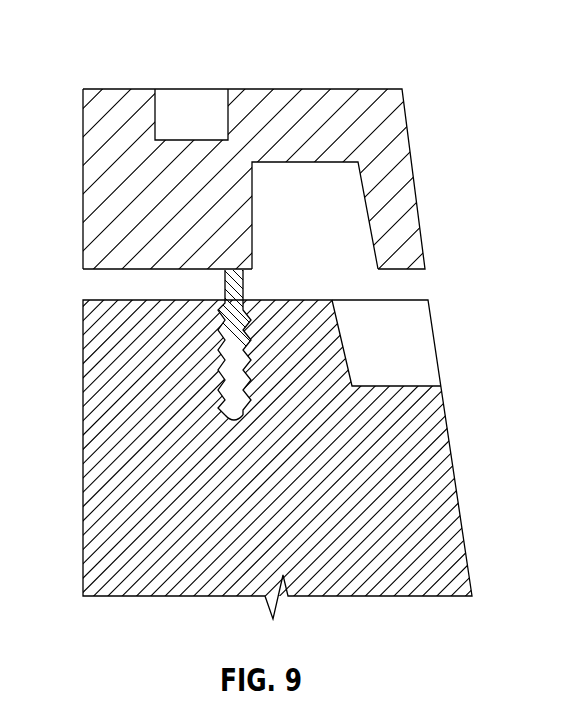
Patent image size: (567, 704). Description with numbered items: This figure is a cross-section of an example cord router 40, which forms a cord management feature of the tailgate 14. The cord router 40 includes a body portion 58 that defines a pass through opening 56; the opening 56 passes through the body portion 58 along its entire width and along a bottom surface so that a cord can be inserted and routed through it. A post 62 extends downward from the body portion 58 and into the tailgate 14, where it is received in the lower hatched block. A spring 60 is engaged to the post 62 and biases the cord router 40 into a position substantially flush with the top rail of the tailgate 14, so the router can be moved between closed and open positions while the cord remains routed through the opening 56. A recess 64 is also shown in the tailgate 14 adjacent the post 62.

The tailgate 14 is at (466, 548).
The cord router 40 is at (188, 89).
The pass through opening 56 is at (312, 158).
The body portion 58 is at (124, 144).
The spring 60 is at (250, 328).
The post 62 is at (232, 426).
The recess 64 is at (436, 350).